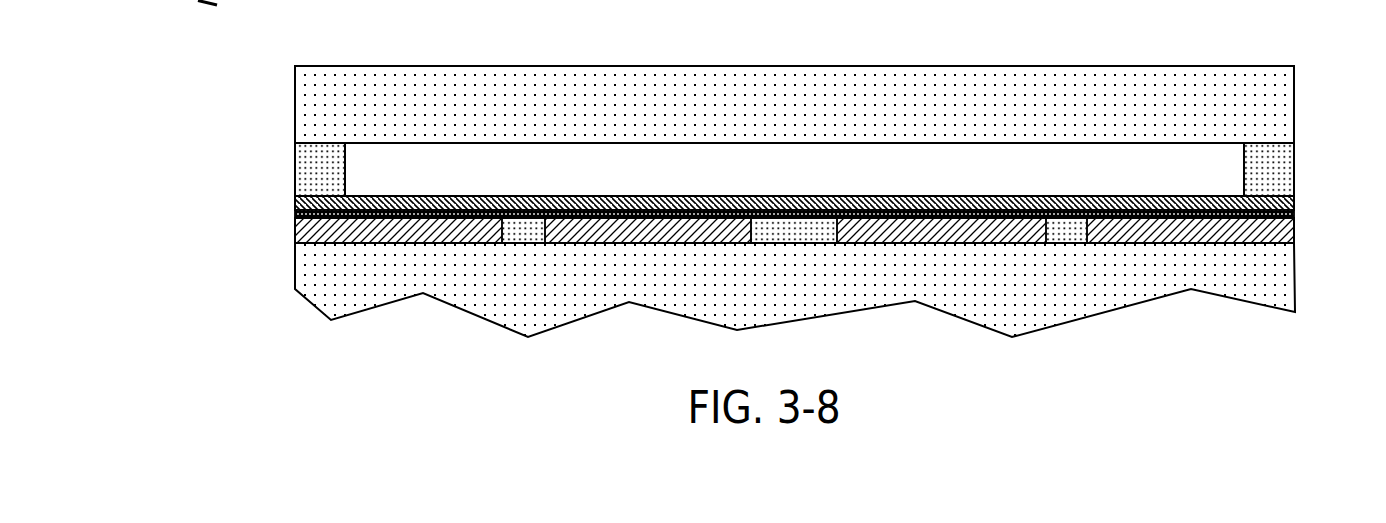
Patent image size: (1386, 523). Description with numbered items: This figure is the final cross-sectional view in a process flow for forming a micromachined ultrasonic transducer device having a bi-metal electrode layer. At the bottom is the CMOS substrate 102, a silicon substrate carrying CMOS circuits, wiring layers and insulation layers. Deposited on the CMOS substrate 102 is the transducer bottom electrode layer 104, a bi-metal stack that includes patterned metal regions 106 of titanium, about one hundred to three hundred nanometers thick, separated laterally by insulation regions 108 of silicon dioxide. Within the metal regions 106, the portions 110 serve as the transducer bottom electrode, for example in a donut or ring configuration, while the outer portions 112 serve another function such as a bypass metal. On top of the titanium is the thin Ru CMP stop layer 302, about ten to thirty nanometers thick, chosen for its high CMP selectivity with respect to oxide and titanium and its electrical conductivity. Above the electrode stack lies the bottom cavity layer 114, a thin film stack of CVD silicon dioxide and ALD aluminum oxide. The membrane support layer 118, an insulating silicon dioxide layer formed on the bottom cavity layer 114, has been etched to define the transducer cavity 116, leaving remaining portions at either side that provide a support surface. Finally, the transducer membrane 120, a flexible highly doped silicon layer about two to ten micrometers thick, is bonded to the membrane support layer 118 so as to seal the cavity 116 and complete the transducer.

The CMOS substrate 102 is at (300, 262).
The transducer bottom electrode layer 104 is at (1308, 210).
The metal regions 106 is at (295, 222).
The insulation regions 108 is at (513, 245).
The transducer bottom electrode portions 110 is at (664, 240).
The bypass metal portions 112 is at (417, 240).
The bottom cavity layer 114 is at (295, 203).
The transducer cavity 116 is at (808, 184).
The membrane support layer 118 is at (308, 166).
The transducer membrane 120 is at (312, 105).
The Ru CMP stop layer 302 is at (297, 214).